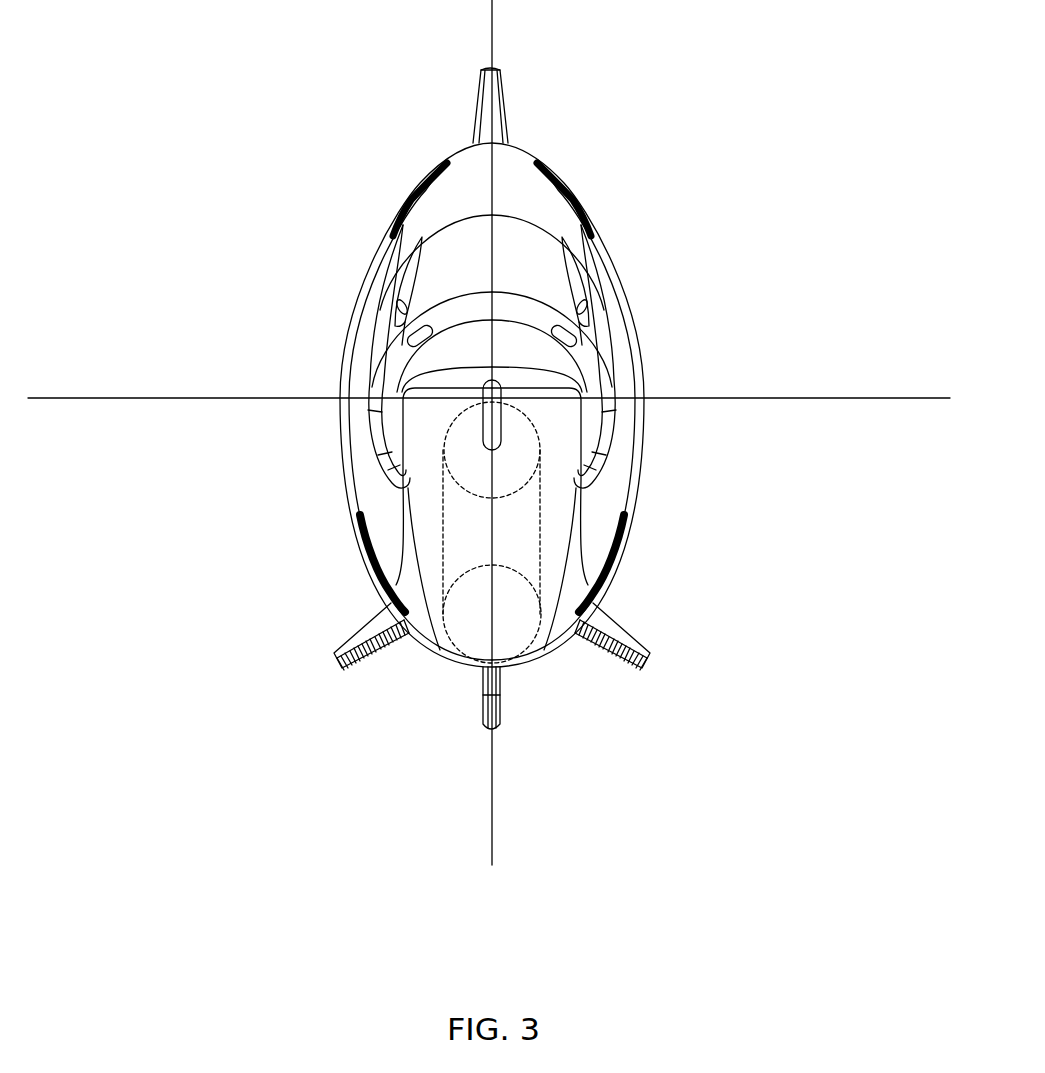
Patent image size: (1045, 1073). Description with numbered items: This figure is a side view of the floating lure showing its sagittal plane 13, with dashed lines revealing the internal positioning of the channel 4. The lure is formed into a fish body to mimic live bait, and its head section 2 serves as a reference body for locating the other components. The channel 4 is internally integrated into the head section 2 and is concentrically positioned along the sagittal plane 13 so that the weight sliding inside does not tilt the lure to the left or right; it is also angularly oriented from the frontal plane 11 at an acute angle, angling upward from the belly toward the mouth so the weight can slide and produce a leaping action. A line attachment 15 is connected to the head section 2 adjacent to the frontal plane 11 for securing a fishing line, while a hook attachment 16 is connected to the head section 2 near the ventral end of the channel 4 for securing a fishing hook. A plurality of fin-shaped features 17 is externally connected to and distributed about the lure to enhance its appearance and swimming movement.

The head section 2 is at (387, 155).
The channel 4 is at (540, 556).
The frontal plane 11 is at (743, 400).
The sagittal plane 13 is at (493, 832).
The line attachment 15 is at (498, 386).
The hook attachment 16 is at (500, 716).
The plurality of fin-shaped features 17 is at (352, 671).